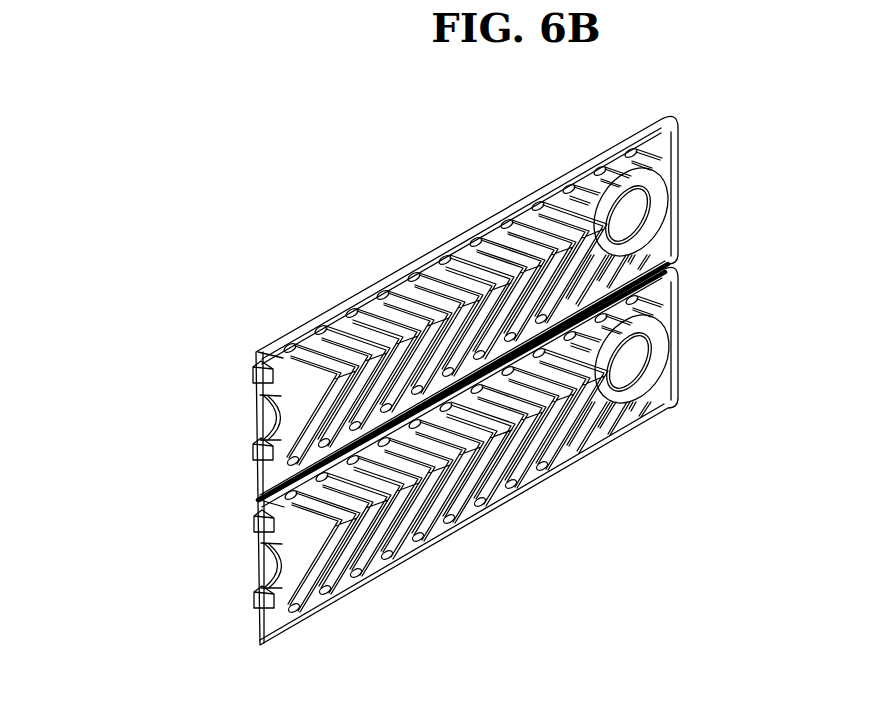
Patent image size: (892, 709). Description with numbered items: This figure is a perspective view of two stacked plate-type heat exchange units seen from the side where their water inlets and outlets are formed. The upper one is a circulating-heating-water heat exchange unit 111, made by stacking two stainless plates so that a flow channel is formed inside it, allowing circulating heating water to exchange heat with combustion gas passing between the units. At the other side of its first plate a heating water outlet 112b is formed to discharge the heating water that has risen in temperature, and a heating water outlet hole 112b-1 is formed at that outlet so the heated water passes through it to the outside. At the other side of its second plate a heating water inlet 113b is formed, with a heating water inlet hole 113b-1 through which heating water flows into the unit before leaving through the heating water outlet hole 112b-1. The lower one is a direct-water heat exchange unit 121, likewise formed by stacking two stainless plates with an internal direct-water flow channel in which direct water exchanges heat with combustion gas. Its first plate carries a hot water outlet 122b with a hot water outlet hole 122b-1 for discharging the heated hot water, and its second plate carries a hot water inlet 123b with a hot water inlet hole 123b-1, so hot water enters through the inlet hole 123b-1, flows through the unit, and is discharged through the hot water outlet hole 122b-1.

The circulating-heating-water heat exchange unit 111 is at (438, 310).
The direct-water heat exchange unit 121 is at (438, 460).
The heating water outlet 112b is at (255, 462).
The heating water outlet hole 112b-1 is at (257, 422).
The heating water inlet 113b is at (255, 376).
The heating water inlet hole 113b-1 is at (256, 404).
The hot water outlet 122b is at (255, 610).
The hot water outlet hole 122b-1 is at (257, 570).
The hot water inlet 123b is at (255, 525).
The hot water inlet hole 123b-1 is at (256, 552).